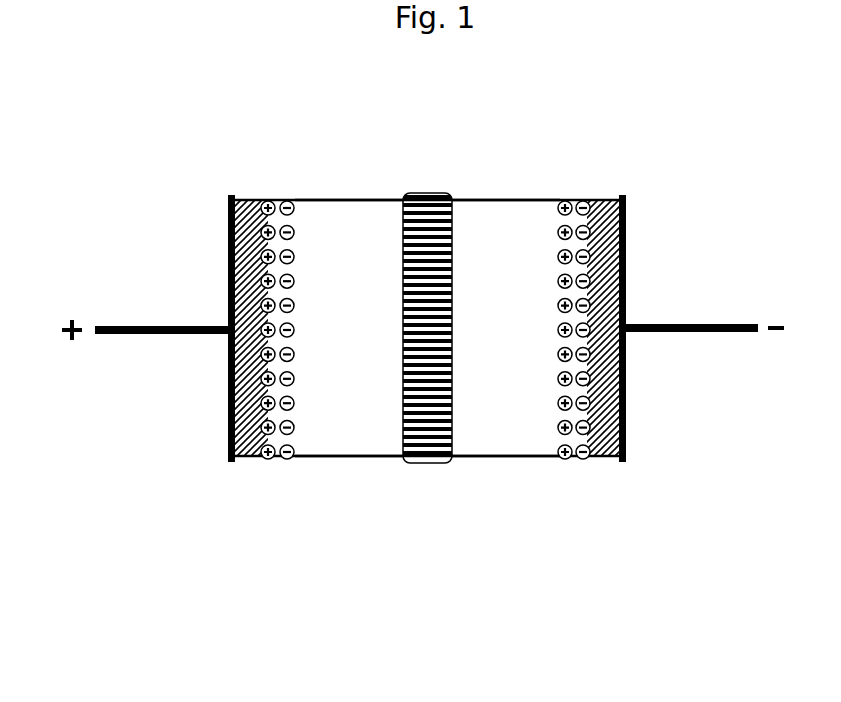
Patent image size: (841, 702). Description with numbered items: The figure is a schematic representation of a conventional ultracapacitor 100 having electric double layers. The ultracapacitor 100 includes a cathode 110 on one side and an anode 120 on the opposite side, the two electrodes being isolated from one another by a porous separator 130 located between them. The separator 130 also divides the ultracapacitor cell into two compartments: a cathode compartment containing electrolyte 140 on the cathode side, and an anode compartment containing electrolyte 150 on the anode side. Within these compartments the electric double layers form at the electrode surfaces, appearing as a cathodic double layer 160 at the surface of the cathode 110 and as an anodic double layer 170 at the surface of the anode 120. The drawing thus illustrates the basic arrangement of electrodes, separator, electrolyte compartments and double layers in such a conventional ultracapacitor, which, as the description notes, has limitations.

The ultracapacitor 100 is at (78, 143).
The cathode 110 is at (243, 473).
The anode 120 is at (612, 473).
The porous separator 130 is at (428, 470).
The electrolyte in cathode compartment 140 is at (328, 428).
The electrolyte in anode compartment 150 is at (515, 428).
The cathodic double layer 160 is at (275, 196).
The anodic double layer 170 is at (575, 196).